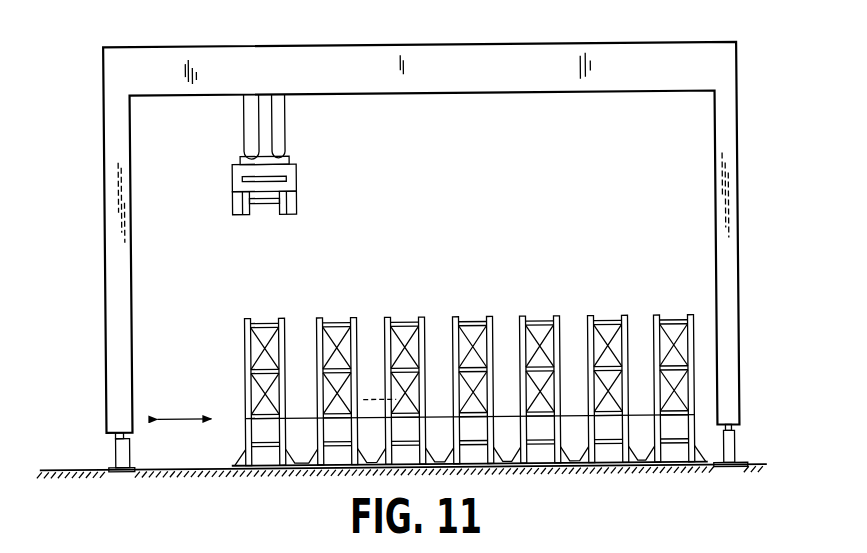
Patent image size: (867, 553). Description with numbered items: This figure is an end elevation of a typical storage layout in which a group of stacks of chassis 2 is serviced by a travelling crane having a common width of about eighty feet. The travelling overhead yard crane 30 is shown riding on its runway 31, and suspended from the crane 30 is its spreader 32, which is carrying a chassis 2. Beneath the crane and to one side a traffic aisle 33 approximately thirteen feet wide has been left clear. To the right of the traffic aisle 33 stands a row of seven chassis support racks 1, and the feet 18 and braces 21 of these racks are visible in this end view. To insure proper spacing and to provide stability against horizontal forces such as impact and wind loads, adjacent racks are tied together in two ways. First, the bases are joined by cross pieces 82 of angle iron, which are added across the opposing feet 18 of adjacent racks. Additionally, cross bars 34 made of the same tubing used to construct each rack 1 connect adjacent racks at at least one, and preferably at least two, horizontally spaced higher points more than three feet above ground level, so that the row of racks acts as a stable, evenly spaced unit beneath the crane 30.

The chassis support rack 1 is at (699, 343).
The chassis 2 is at (302, 195).
The feet 18 is at (299, 467).
The braces 21 is at (387, 464).
The travelling overhead yard crane 30 is at (96, 153).
The runway 31 is at (116, 473).
The spreader 32 is at (303, 175).
The traffic aisle 33 is at (182, 419).
The cross bars 34 is at (566, 463).
The cross pieces 82 is at (646, 463).